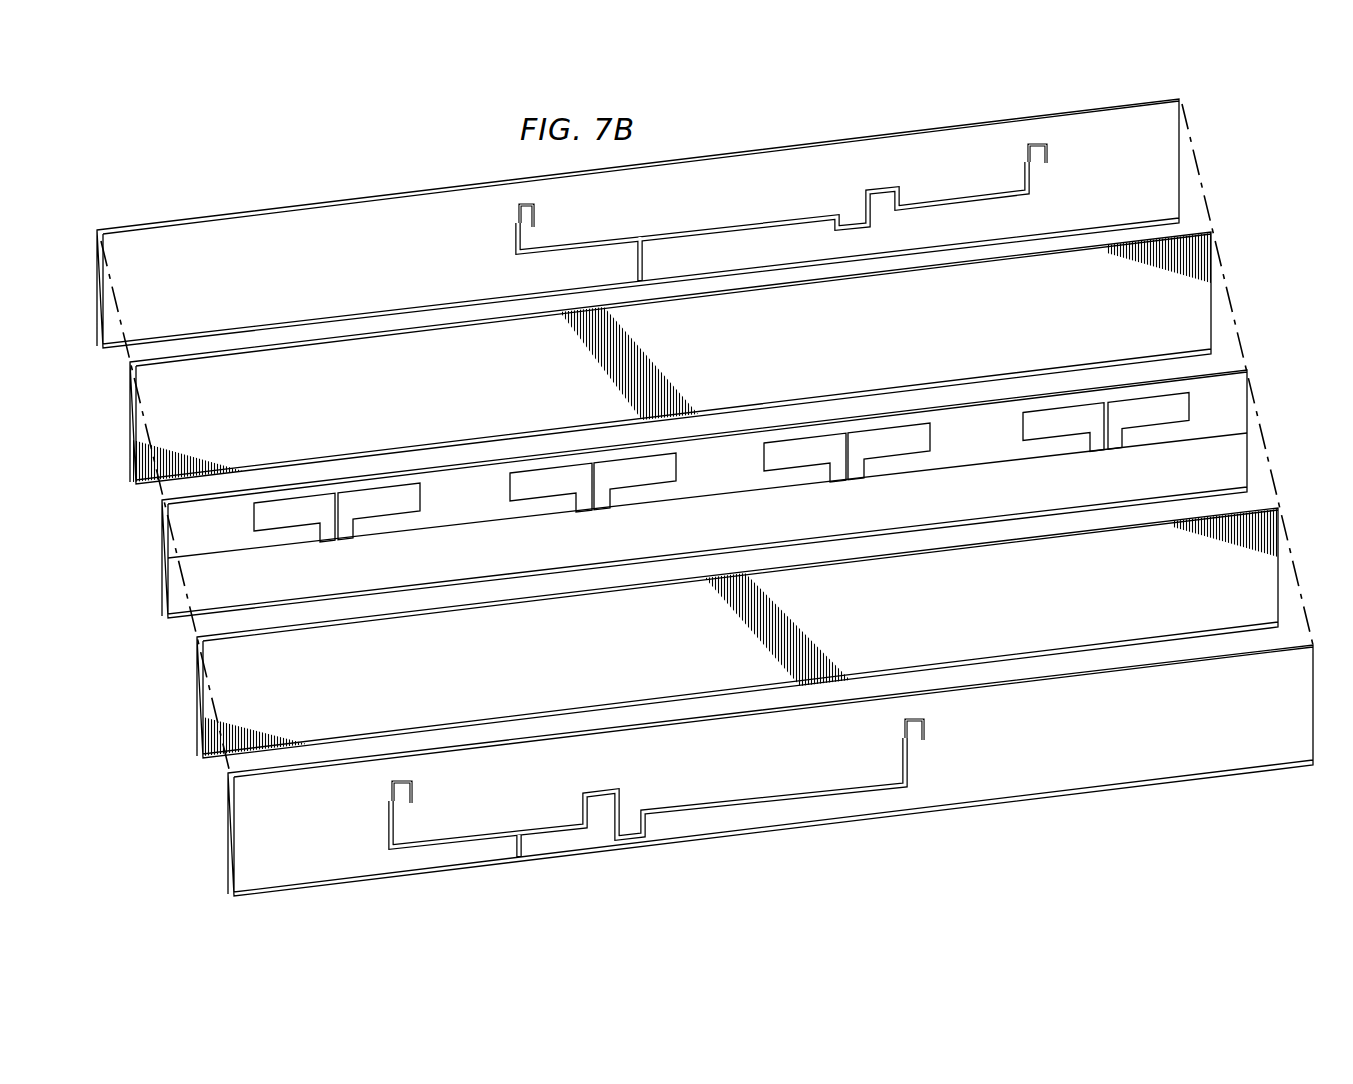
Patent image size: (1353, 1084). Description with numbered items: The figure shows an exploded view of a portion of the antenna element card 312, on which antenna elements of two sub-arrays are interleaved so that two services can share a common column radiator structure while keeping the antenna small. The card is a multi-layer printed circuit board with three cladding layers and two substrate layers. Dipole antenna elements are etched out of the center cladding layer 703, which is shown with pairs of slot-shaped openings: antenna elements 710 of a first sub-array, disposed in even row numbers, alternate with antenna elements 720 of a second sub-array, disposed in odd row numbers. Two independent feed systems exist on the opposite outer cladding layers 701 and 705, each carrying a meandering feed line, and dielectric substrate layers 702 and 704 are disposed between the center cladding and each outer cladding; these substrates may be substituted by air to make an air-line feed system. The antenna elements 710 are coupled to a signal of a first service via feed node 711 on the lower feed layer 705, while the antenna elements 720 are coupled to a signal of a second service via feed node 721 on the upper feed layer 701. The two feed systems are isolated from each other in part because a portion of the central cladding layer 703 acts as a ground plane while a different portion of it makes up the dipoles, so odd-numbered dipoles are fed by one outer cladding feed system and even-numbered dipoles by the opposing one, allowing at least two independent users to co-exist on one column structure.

The antenna element card 312 is at (1022, 832).
The outer cladding feed layer 701 is at (331, 279).
The dielectric substrate layer 702 is at (941, 342).
The center cladding layer 703 is at (744, 536).
The dielectric substrate layer 704 is at (1039, 614).
The outer cladding feed layer 705 is at (1129, 744).
The antenna elements of first sub-array 710 is at (253, 516).
The antenna elements of second sub-array 720 is at (510, 485).
The feed node 721 is at (649, 273).
The feed node 711 is at (530, 852).